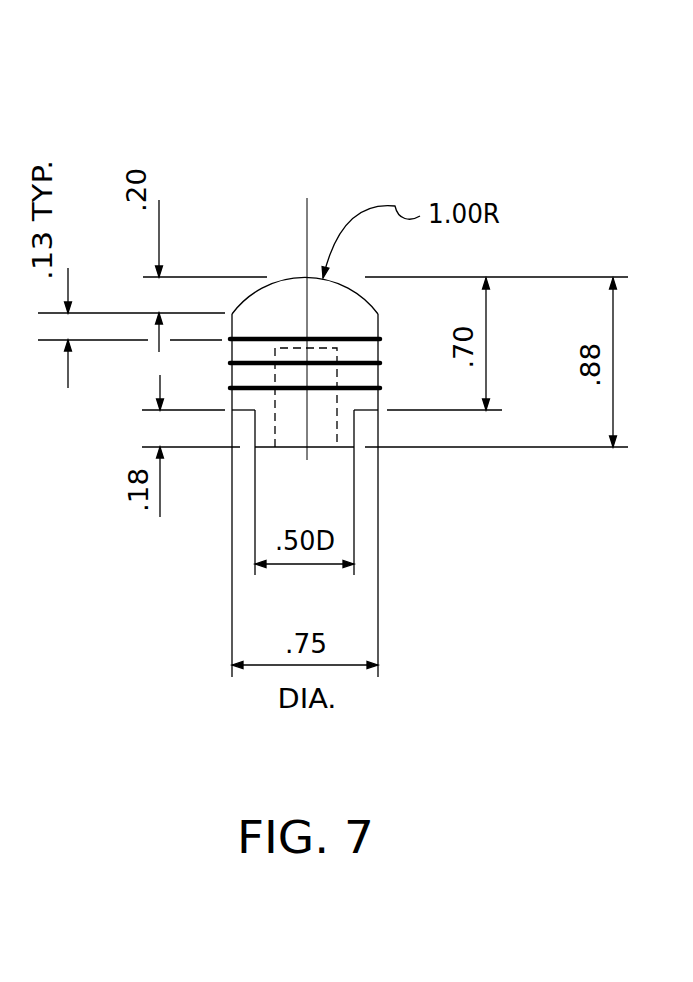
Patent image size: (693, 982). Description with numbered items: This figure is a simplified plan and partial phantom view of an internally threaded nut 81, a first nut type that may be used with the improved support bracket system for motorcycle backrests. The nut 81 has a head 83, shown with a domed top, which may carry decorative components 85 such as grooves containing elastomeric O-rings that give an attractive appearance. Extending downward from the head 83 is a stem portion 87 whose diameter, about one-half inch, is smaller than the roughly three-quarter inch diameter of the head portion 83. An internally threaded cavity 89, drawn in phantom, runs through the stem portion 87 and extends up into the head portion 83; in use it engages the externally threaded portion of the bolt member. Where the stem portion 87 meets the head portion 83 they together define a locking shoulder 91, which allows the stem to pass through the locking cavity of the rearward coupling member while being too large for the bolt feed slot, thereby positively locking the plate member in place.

The internally threaded nut 81 is at (383, 127).
The head 83 is at (358, 303).
The decorative components 85 is at (408, 392).
The stem portion 87 is at (345, 435).
The internally threaded cavity 89 is at (325, 435).
The locking shoulder 91 is at (253, 415).